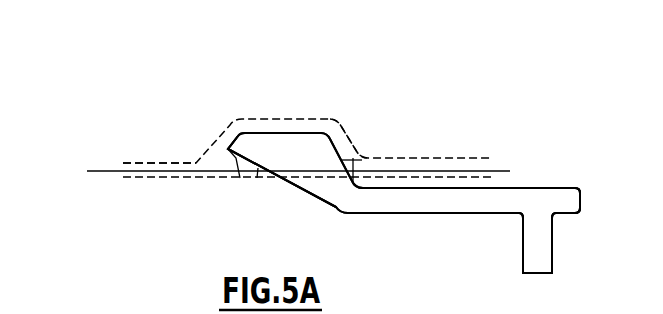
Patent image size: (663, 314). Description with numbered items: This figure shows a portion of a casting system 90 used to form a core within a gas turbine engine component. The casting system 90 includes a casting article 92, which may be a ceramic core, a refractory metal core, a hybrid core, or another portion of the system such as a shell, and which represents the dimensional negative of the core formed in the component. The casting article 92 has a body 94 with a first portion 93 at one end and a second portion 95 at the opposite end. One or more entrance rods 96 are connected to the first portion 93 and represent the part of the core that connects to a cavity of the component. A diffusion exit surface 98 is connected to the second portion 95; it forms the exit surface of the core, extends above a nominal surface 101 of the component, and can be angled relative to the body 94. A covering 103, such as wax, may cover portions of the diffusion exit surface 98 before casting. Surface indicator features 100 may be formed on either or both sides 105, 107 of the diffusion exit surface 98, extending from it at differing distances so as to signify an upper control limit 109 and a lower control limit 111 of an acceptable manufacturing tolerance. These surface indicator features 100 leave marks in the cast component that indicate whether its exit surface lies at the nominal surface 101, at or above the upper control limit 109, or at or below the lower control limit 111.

The casting system 90 is at (330, 91).
The casting article 92 is at (438, 130).
The first portion 93 is at (539, 207).
The body 94 is at (418, 206).
The second portion 95 is at (374, 212).
The entrance rods 96 is at (542, 250).
The diffusion exit surface 98 is at (328, 182).
The surface indicator feature 100 is at (260, 170).
The nominal surface 101 is at (101, 172).
The covering 103 is at (295, 117).
The side 105 is at (347, 128).
The side 107 is at (292, 185).
The upper control limit 109 is at (160, 163).
The lower control limit 111 is at (168, 178).